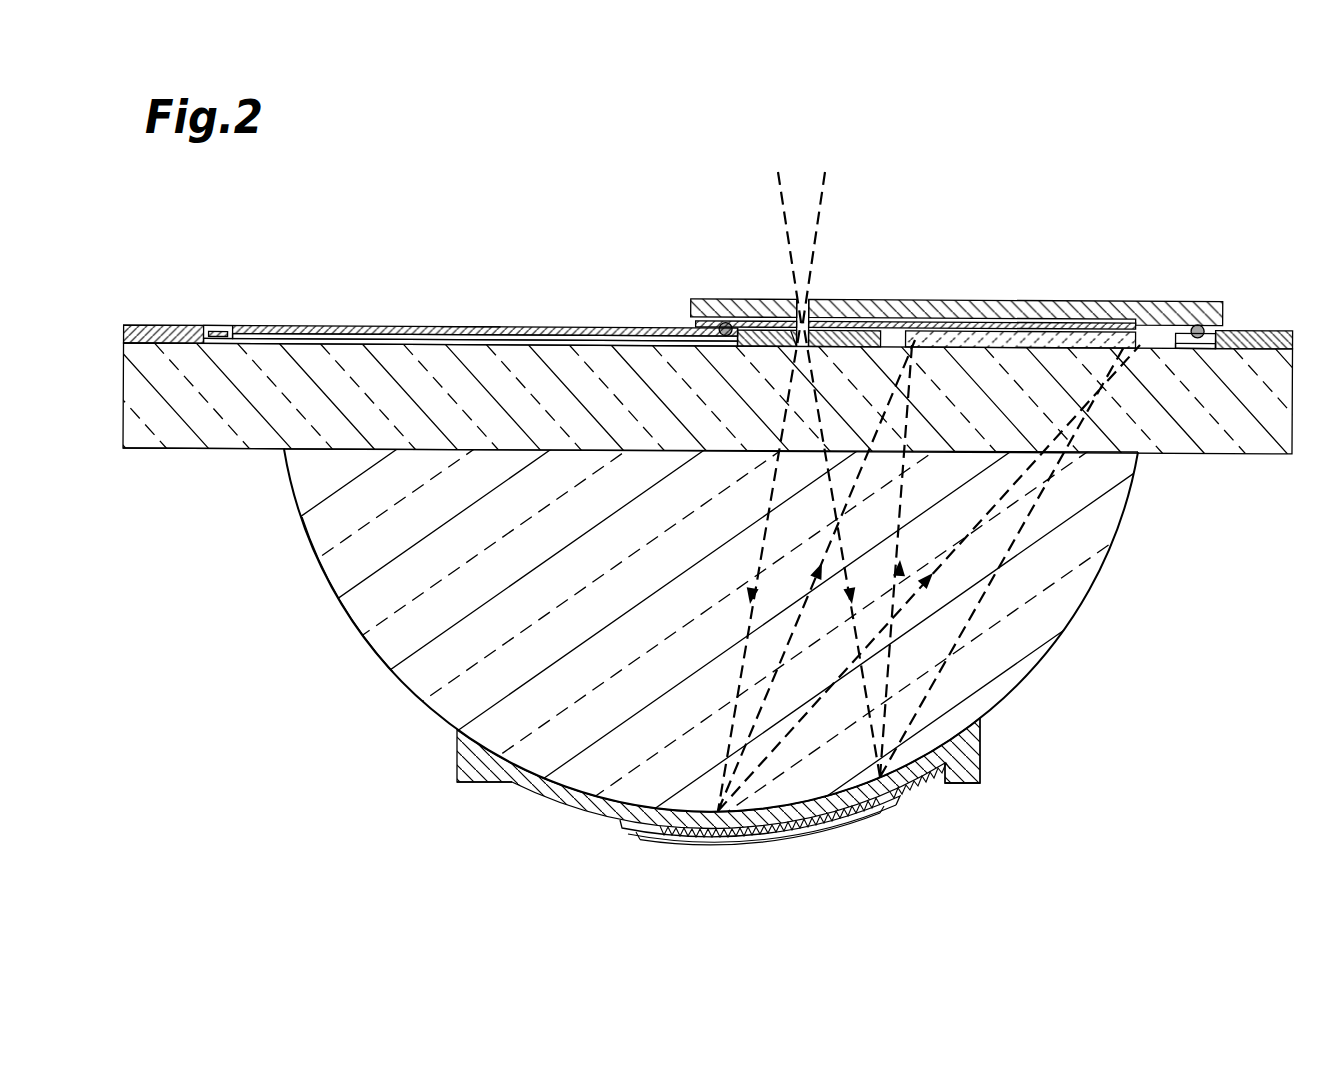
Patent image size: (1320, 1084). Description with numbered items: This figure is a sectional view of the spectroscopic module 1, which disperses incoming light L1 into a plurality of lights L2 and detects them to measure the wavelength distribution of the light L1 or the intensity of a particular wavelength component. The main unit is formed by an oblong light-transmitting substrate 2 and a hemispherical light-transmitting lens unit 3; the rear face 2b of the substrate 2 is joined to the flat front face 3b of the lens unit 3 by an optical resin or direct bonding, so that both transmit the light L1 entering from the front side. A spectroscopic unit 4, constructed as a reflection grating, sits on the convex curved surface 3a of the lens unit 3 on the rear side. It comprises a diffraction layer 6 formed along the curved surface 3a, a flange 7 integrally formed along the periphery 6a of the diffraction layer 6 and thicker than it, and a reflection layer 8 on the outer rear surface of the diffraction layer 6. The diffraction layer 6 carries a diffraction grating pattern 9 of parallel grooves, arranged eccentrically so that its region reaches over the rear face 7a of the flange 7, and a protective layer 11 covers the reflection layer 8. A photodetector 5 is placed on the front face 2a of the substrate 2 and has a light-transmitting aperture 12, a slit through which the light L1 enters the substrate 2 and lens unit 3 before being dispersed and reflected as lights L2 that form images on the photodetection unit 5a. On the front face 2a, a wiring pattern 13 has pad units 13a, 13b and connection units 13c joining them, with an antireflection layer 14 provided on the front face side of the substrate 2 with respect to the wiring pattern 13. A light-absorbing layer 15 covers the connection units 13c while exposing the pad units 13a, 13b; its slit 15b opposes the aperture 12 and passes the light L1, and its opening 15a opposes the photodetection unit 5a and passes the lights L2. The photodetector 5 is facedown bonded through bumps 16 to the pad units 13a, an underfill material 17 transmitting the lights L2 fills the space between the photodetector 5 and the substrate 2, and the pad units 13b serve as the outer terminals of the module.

The spectroscopic module 1 is at (1218, 178).
The substrate 2 is at (137, 392).
The front face of substrate 2a is at (162, 335).
The rear face of substrate 2b is at (160, 450).
The lens unit 3 is at (337, 573).
The curved surface 3a is at (367, 645).
The front face of lens unit 3b is at (310, 448).
The spectroscopic unit 4 is at (743, 815).
The photodetector 5 is at (1084, 286).
The photodetection unit 5a is at (1040, 318).
The diffraction layer 6 is at (550, 790).
The periphery of diffraction layer 6a is at (512, 785).
The flange 7 is at (970, 757).
The rear face of flange 7a is at (957, 785).
The reflection layer 8 is at (851, 818).
The diffraction grating pattern 9 is at (743, 838).
The protective layer 11 is at (788, 843).
The light-transmitting aperture 12 is at (809, 302).
The wiring pattern 13 is at (428, 325).
The pad units 13a is at (712, 326).
The pad units 13b is at (217, 325).
The connection units 13c is at (468, 325).
The antireflection layer 14 is at (343, 338).
The light-absorbing layer 15 is at (527, 333).
The opening 15a is at (878, 328).
The slit 15b is at (795, 324).
The bumps 16 is at (730, 319).
The underfill material 17 is at (953, 330).
The light L1 is at (780, 193).
The lights L2 is at (913, 512).